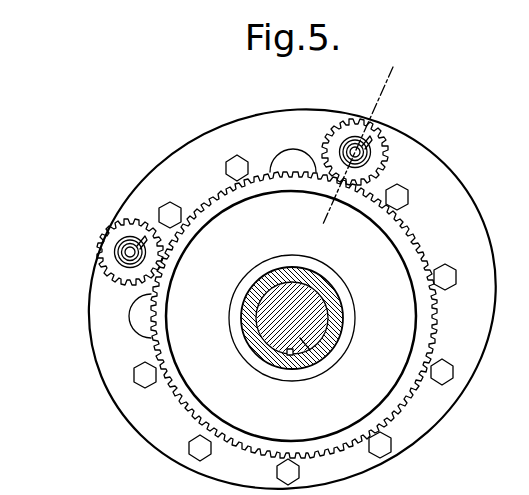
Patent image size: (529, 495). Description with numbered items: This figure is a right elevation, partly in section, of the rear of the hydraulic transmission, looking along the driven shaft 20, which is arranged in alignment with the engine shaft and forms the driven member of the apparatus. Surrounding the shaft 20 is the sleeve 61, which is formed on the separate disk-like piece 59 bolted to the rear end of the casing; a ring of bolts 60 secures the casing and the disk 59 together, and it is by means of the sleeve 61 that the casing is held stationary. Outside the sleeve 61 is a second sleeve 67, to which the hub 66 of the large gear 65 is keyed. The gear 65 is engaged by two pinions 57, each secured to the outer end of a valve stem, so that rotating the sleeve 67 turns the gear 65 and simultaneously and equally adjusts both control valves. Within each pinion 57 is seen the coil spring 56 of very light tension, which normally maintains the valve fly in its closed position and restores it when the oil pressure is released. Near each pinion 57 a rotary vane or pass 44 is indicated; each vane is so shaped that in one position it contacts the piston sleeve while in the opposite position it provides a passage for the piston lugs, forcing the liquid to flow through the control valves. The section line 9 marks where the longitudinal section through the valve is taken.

The section line 9- 9 is at (359, 146).
The shaft 20 is at (323, 352).
The rotary vane or pass 44 is at (288, 153).
The coil spring 56 is at (368, 150).
The pinion 57 is at (343, 131).
The disk-like piece 59 is at (280, 272).
The bolts 60 is at (441, 372).
The sleeve 61 is at (247, 337).
The gear 65 is at (193, 407).
The hub 66 is at (272, 373).
The sleeve 67 is at (309, 364).